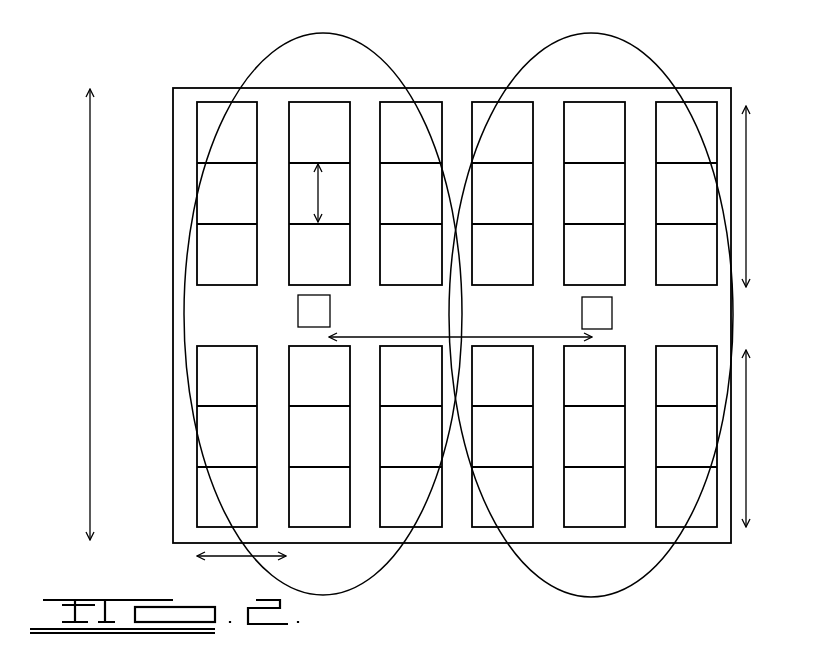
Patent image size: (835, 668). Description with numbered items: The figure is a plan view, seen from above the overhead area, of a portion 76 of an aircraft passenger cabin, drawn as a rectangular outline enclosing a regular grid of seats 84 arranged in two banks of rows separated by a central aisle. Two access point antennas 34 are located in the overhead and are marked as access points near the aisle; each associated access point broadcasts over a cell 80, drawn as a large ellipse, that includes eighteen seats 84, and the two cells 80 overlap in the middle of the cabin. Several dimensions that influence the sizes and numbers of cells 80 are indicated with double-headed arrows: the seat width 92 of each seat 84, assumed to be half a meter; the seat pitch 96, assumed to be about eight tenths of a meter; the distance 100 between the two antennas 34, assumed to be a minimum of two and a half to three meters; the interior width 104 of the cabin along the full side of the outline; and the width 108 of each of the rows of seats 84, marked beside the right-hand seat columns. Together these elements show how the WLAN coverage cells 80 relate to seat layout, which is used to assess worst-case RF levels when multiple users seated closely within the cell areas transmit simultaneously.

The access point antenna 34 is at (508, 312).
The portion of aircraft passenger cabin 76 is at (172, 115).
The cell 80 is at (243, 85).
The seat 84 is at (457, 314).
The seat width 92 is at (318, 192).
The seat pitch 96 is at (287, 563).
The distance between antennas 100 is at (500, 337).
The interior width 104 is at (92, 224).
The width of row of seats 108 is at (747, 262).